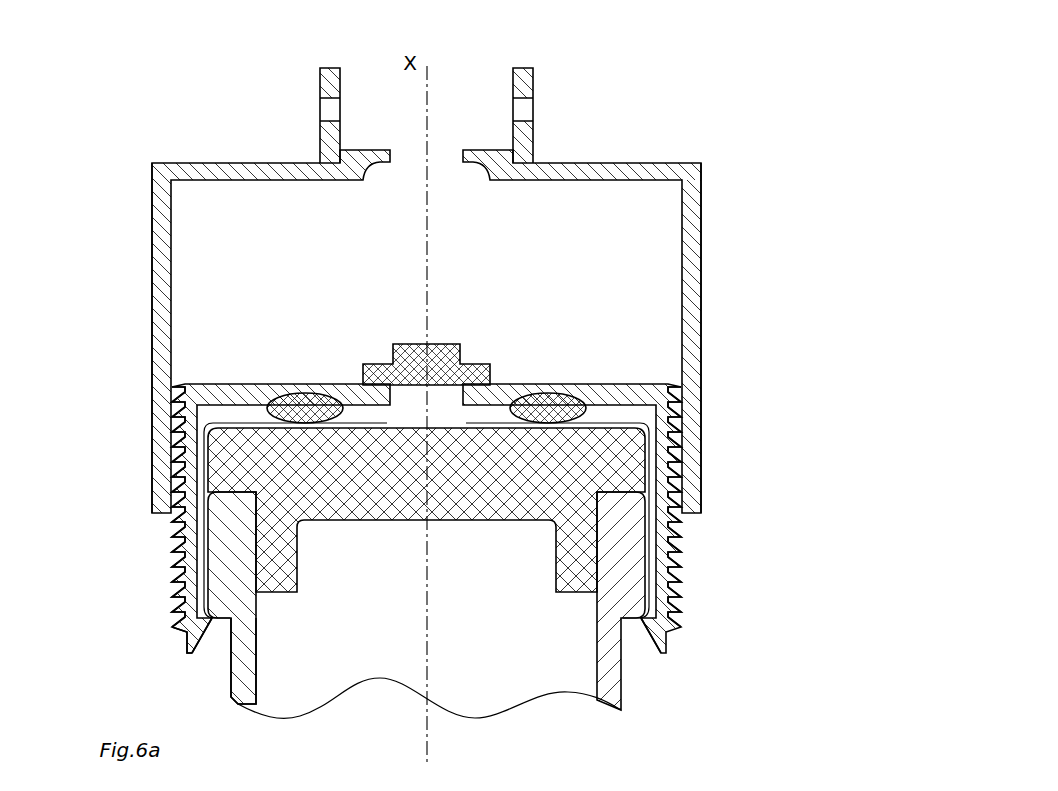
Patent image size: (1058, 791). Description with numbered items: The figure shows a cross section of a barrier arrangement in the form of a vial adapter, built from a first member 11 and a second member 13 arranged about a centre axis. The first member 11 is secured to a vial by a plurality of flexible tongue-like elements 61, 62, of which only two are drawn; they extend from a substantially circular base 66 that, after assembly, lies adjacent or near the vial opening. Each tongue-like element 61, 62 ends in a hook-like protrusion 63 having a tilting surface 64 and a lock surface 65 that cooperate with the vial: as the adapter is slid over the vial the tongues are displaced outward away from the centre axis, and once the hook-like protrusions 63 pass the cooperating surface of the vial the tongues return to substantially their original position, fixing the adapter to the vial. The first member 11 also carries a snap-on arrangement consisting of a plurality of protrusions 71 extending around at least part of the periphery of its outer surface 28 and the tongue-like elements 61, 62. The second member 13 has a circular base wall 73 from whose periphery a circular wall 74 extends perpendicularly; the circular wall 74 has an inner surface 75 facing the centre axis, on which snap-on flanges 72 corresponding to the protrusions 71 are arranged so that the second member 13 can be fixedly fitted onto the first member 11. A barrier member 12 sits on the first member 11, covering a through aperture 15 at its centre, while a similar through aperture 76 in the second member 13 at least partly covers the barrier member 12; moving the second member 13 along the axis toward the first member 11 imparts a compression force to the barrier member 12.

The first member 11 is at (445, 514).
The barrier member 12 is at (441, 340).
The second member 13 is at (476, 415).
The through aperture 15 is at (412, 399).
The outer surface 28 is at (678, 557).
The flexible tongue-like element 61 is at (182, 603).
The flexible tongue-like element 62 is at (653, 578).
The hook-like protrusion 63 is at (210, 635).
The tilting surface 64 is at (218, 621).
The lock surface 65 is at (214, 607).
The circular base 66 is at (507, 388).
The snap-on protrusion 71 is at (180, 551).
The snap-on flange 72 is at (173, 386).
The circular base wall 73 is at (584, 165).
The circular wall 74 is at (702, 322).
The inner surface 75 is at (170, 247).
The through aperture 76 is at (427, 146).